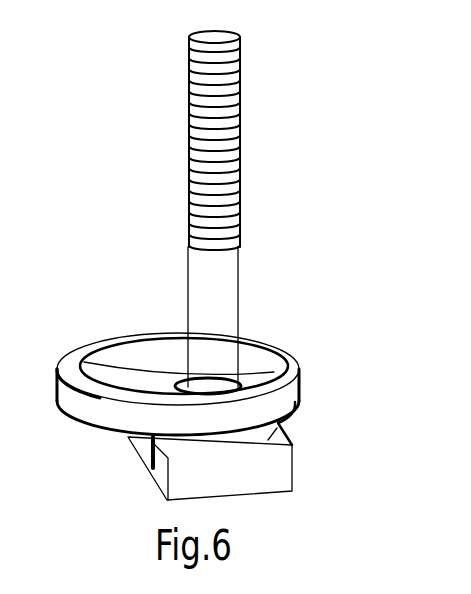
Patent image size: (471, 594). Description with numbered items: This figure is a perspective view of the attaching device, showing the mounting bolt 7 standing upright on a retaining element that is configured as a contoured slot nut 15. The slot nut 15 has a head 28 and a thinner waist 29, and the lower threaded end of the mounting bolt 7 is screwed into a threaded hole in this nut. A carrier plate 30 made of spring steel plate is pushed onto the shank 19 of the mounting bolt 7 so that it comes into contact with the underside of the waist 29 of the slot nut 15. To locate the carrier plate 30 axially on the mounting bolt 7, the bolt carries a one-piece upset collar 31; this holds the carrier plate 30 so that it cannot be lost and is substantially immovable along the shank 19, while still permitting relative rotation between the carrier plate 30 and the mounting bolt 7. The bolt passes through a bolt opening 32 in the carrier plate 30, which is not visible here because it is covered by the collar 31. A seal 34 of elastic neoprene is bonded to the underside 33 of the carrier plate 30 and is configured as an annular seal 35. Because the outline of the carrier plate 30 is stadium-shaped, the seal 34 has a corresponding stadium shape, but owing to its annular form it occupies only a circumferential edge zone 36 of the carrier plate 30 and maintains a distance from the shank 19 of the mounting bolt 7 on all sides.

The mounting bolt 7 is at (225, 209).
The shank 19 is at (243, 190).
The slot nut 15 is at (135, 480).
The head 28 is at (267, 472).
The waist 29 is at (287, 424).
The carrier plate 30 is at (142, 380).
The collar 31 is at (240, 378).
The bolt opening 32 is at (176, 380).
The underside 33 is at (98, 358).
The seal 34 is at (295, 351).
The annular seal 35 is at (285, 368).
The circumferential edge zone 36 is at (248, 320).